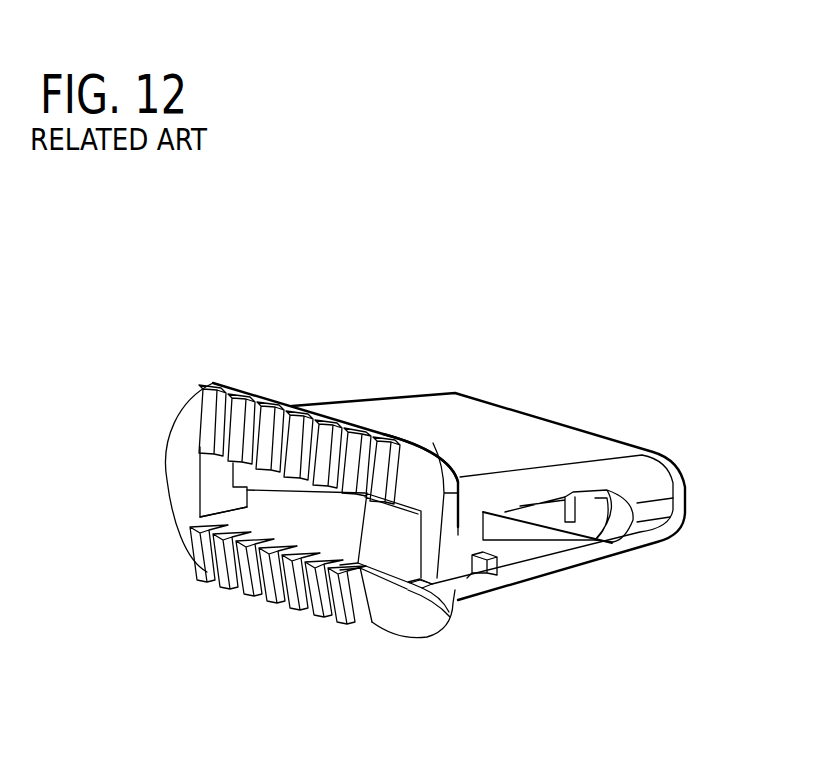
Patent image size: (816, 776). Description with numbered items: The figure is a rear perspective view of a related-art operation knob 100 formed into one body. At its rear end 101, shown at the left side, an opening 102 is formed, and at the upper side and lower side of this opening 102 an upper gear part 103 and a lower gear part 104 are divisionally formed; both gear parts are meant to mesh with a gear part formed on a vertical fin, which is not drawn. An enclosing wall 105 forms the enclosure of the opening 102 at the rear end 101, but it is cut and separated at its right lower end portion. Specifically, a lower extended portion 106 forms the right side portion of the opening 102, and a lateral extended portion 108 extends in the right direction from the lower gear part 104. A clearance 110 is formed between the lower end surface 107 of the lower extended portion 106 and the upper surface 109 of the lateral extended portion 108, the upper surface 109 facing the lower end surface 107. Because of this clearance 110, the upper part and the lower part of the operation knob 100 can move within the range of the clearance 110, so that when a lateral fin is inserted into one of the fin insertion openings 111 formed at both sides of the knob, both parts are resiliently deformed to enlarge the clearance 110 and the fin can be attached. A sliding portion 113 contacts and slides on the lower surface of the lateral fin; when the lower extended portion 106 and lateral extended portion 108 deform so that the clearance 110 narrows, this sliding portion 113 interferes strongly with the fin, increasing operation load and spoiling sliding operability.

The operation knob 100 is at (340, 318).
The rear end 101 is at (181, 467).
The opening 102 is at (313, 523).
The upper gear part 103 is at (288, 425).
The lower gear part 104 is at (208, 566).
The enclosing wall 105 is at (408, 458).
The lower extended portion 106 is at (457, 535).
The lower end surface 107 is at (463, 593).
The lateral extended portion 108 is at (412, 621).
The upper surface 109 is at (436, 588).
The clearance 110 is at (420, 586).
The fin insertion opening 111 is at (552, 545).
The sliding portion 113 is at (483, 558).